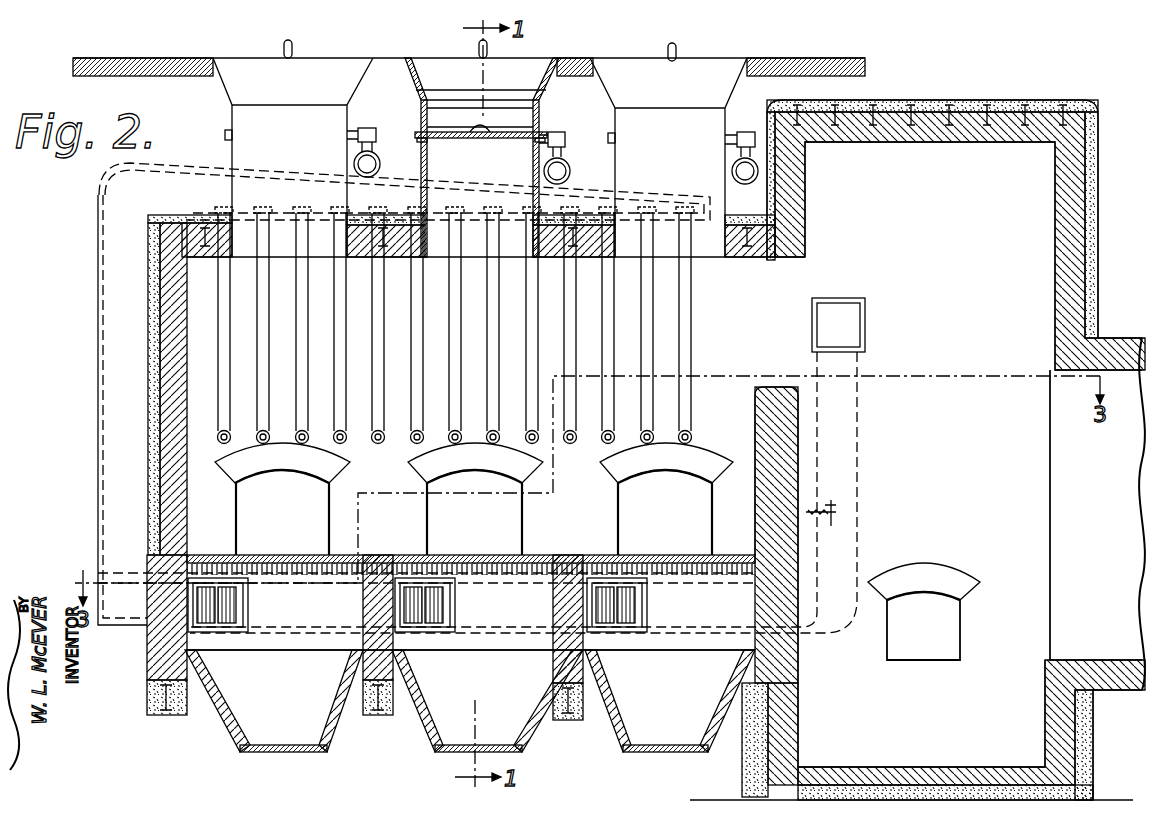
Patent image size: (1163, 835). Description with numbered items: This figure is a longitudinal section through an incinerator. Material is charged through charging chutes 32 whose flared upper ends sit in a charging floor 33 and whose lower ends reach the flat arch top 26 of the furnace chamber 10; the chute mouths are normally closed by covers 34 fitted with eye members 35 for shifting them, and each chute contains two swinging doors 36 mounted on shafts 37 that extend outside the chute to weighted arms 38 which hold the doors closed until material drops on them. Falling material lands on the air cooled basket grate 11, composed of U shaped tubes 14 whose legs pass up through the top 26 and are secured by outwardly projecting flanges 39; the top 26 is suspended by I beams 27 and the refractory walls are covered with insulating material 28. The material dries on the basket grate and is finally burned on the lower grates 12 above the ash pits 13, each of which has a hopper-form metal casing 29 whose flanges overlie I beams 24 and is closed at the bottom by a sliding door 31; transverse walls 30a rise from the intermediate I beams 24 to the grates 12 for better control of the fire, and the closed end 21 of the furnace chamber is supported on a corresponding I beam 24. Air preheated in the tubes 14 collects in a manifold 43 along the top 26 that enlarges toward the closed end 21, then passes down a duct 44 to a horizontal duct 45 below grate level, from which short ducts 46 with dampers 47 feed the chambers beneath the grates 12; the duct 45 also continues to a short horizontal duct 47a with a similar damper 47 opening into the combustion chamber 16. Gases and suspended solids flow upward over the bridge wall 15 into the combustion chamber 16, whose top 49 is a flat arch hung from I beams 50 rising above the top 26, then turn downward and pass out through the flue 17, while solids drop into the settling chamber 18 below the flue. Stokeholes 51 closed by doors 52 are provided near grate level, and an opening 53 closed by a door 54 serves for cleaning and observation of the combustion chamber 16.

The furnace chamber 10 is at (474, 463).
The basket grate 11 is at (694, 344).
The lower grates 12 is at (532, 562).
The ash pits 13 is at (471, 681).
The tubes 14 is at (655, 400).
The bridge wall 15 is at (800, 472).
The combustion chamber 16 is at (973, 256).
The flue 17 is at (1063, 625).
The settling chamber 18 is at (921, 713).
The closed end 21 is at (178, 392).
The I beams 24 is at (150, 700).
The flat arch top 26 is at (190, 214).
The I beams 27 is at (199, 228).
The insulating material 28 is at (158, 320).
The metal casing 29 is at (222, 734).
The transverse walls 30a is at (374, 612).
The door 31 is at (280, 753).
The charging chutes 32 is at (424, 122).
The charging floor 33 is at (183, 60).
The covers 34 is at (527, 72).
The eye members 35 is at (284, 48).
The swinging doors 36 is at (476, 137).
The shafts 37 is at (360, 128).
The weighted arms 38 is at (383, 153).
The outwardly projecting flanges 39 is at (320, 210).
The header or manifold 43 is at (600, 188).
The duct 44 is at (115, 461).
The horizontal duct 45 is at (474, 618).
The short ducts 46 is at (240, 608).
The damper 47 is at (222, 610).
The short horizontal duct 47a is at (848, 322).
The top of the combustion chamber 49 is at (1000, 130).
The I beams 50 is at (924, 112).
The stokeholes 51 is at (248, 513).
The doors 52 is at (1050, 540).
The opening 53 is at (945, 655).
The door 54 is at (924, 599).